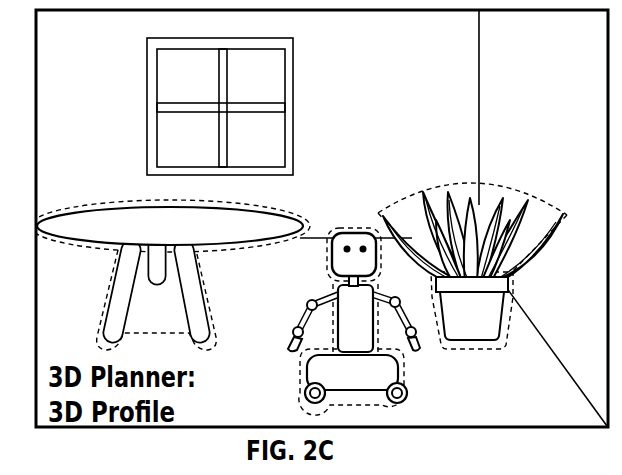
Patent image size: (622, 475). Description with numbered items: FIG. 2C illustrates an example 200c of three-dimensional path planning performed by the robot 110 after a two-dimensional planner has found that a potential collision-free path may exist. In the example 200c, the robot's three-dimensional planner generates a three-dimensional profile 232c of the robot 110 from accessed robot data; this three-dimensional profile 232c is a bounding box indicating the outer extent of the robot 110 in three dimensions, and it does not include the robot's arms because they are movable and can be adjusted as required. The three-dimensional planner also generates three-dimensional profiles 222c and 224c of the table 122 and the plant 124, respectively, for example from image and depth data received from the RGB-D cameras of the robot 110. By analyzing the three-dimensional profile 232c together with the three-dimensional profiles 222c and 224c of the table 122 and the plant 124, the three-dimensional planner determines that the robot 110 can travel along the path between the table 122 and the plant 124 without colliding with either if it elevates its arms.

The example of 3D path planning 200c is at (597, 48).
The 3D profile of the table 222c is at (121, 200).
The table 122 is at (178, 232).
The 3D profile of the plant 224c is at (462, 181).
The plant 124 is at (489, 326).
The 3D profile of the robot 232c is at (354, 229).
The robot 110 is at (369, 380).